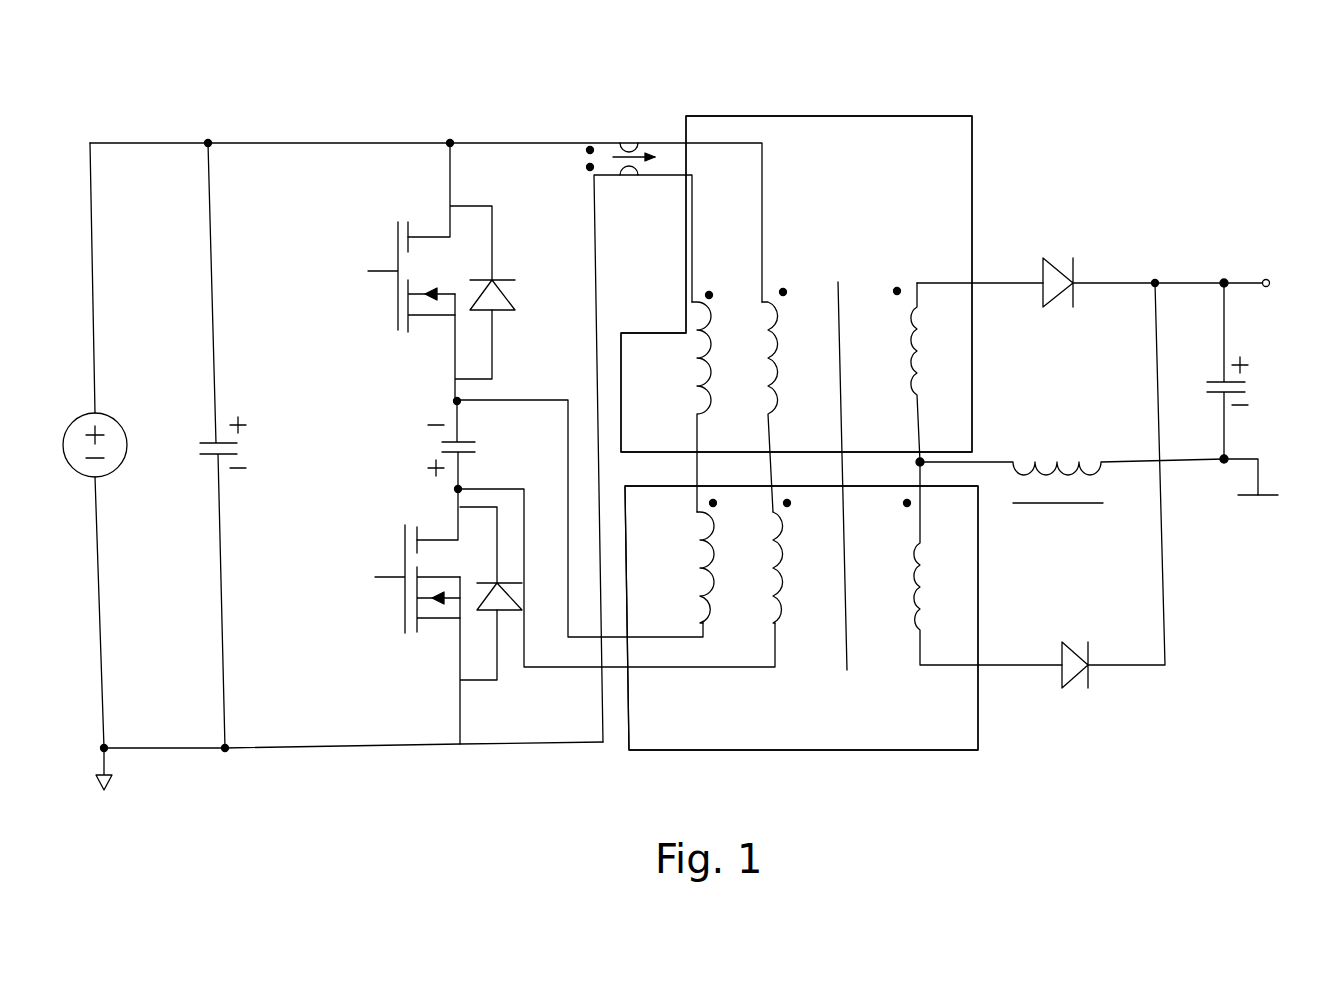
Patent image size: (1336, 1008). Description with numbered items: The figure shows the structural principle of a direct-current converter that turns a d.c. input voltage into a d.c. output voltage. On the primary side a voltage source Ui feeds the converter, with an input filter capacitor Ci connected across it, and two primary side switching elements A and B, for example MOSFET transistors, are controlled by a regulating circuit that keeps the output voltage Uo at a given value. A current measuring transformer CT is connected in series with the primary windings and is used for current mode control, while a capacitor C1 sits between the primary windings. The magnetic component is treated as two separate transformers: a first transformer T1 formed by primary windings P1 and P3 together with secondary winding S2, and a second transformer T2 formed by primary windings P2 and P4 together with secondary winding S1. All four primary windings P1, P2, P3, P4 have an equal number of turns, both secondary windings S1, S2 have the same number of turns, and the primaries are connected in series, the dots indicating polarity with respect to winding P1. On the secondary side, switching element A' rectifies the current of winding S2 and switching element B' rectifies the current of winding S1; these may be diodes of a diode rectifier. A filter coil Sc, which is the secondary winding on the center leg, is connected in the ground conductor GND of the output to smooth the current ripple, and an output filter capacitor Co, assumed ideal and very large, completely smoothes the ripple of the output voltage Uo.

The voltage source Ui is at (86, 466).
The input filter capacitor Ci is at (208, 446).
The primary side switching element A is at (428, 270).
The primary side switching element B is at (434, 616).
The capacitor C1 is at (473, 445).
The current measuring transformer CT is at (621, 138).
The first transformer T1 is at (968, 115).
The second transformer T2 is at (982, 735).
The primary winding P1 is at (722, 401).
The primary winding P2 is at (724, 562).
The primary winding P3 is at (796, 284).
The primary winding P4 is at (801, 618).
The secondary winding S1 is at (983, 561).
The secondary winding S2 is at (969, 372).
The filter coil Sc is at (1089, 464).
The secondary side switching element A' is at (1152, 315).
The secondary side switching element B' is at (1113, 510).
The output voltage Uo is at (1286, 284).
The output filter capacitor Co is at (1251, 371).
The ground terminal GND is at (1278, 513).